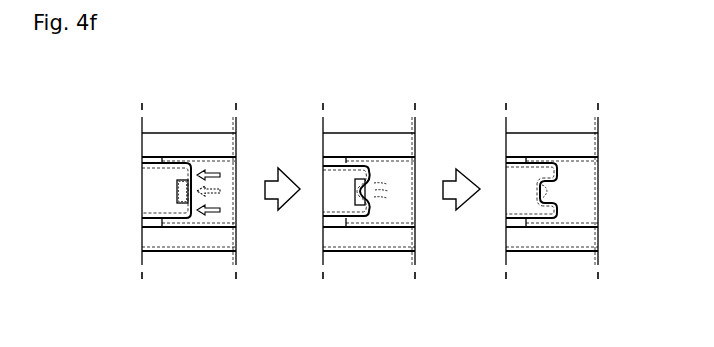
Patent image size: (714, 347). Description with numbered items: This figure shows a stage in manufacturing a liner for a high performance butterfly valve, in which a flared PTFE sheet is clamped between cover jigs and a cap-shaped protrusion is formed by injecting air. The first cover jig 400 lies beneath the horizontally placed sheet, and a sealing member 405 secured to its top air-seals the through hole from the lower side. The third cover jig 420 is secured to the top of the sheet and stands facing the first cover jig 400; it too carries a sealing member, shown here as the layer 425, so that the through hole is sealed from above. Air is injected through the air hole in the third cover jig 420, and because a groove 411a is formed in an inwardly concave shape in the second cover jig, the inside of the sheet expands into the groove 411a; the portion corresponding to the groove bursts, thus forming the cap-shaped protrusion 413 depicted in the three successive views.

The third cover jig 420 is at (163, 143).
The adhesive layer 425 is at (215, 157).
The groove 411a is at (177, 194).
The first cover jig 400 is at (163, 237).
The sealing member 405 is at (218, 237).
The cap-shaped protrusion 413 is at (552, 224).